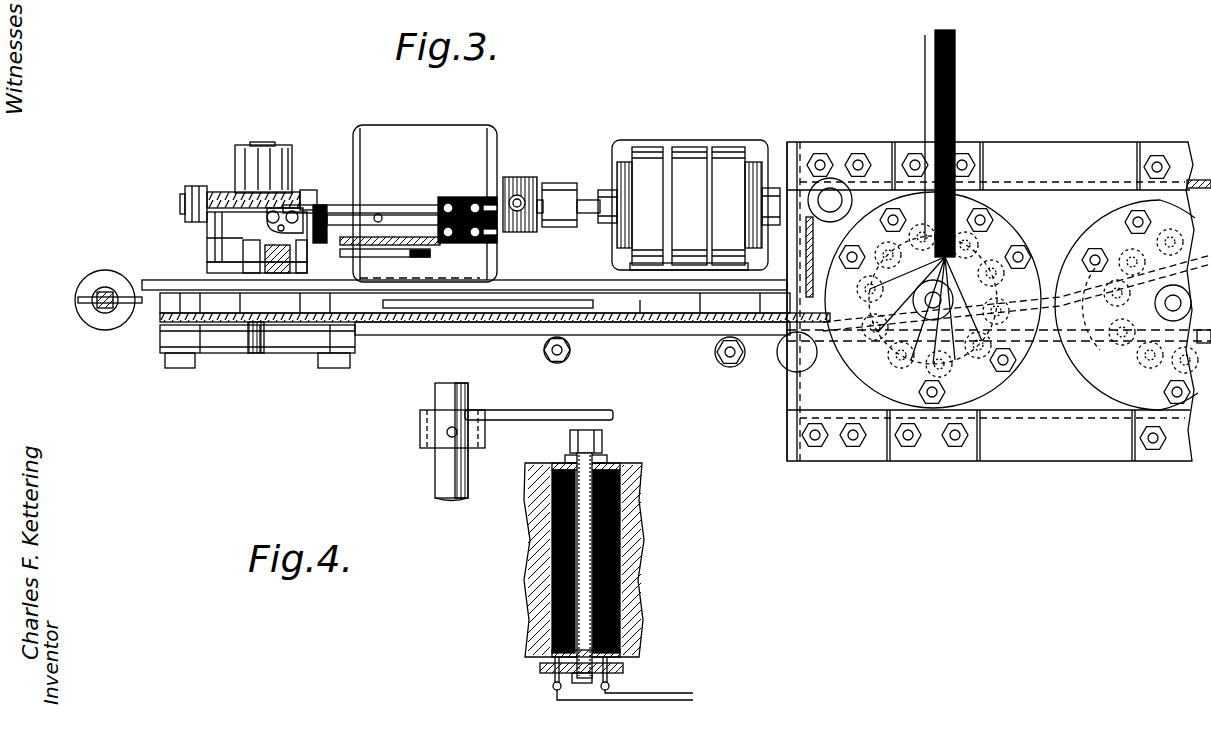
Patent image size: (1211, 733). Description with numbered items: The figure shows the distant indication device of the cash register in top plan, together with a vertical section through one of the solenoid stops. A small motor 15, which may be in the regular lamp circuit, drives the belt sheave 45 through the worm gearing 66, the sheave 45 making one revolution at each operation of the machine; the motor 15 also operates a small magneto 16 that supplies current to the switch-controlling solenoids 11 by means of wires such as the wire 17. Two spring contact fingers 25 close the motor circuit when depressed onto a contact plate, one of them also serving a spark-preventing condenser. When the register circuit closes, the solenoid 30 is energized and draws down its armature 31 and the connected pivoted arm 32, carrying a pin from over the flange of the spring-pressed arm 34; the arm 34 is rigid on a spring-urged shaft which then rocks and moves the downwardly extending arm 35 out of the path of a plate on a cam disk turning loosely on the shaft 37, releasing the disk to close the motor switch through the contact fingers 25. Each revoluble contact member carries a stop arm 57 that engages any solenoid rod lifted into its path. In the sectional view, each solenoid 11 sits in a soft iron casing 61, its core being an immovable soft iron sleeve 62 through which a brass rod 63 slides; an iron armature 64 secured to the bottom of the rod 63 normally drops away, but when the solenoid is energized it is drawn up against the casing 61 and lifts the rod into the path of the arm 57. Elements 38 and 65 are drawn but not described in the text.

In FIG. 3, the solenoid 11 is at (1019, 286).
In FIG. 4, the solenoid 11 is at (640, 586).
In FIG. 3, the motor 15 is at (425, 203).
In FIG. 3, the magneto 16 is at (676, 152).
In FIG. 3, the wire 17 is at (925, 76).
In FIG. 3, the contact finger 25 is at (358, 228).
In FIG. 3, the solenoid 30 is at (76, 300).
In FIG. 3, the armature 31 is at (106, 287).
In FIG. 3, the arm 32 is at (148, 318).
In FIG. 3, the spring pressed arm 34 is at (165, 325).
In FIG. 3, the arm 35 is at (207, 250).
In FIG. 3, the shaft 37 is at (276, 128).
In FIG. 3, the lower block 38 is at (207, 268).
In FIG. 3, the belt sheave 45 is at (252, 322).
In FIG. 3, the stop arm 57 is at (977, 287).
In FIG. 4, the stop arm 57 is at (560, 402).
In FIG. 4, the soft iron casing 61 is at (640, 532).
In FIG. 4, the soft iron sleeve 62 is at (640, 488).
In FIG. 4, the brass rod 63 is at (640, 641).
In FIG. 4, the iron armature 64 is at (625, 669).
In FIG. 3, the hub 65 is at (207, 224).
In FIG. 3, the worm gearing 66 is at (207, 196).